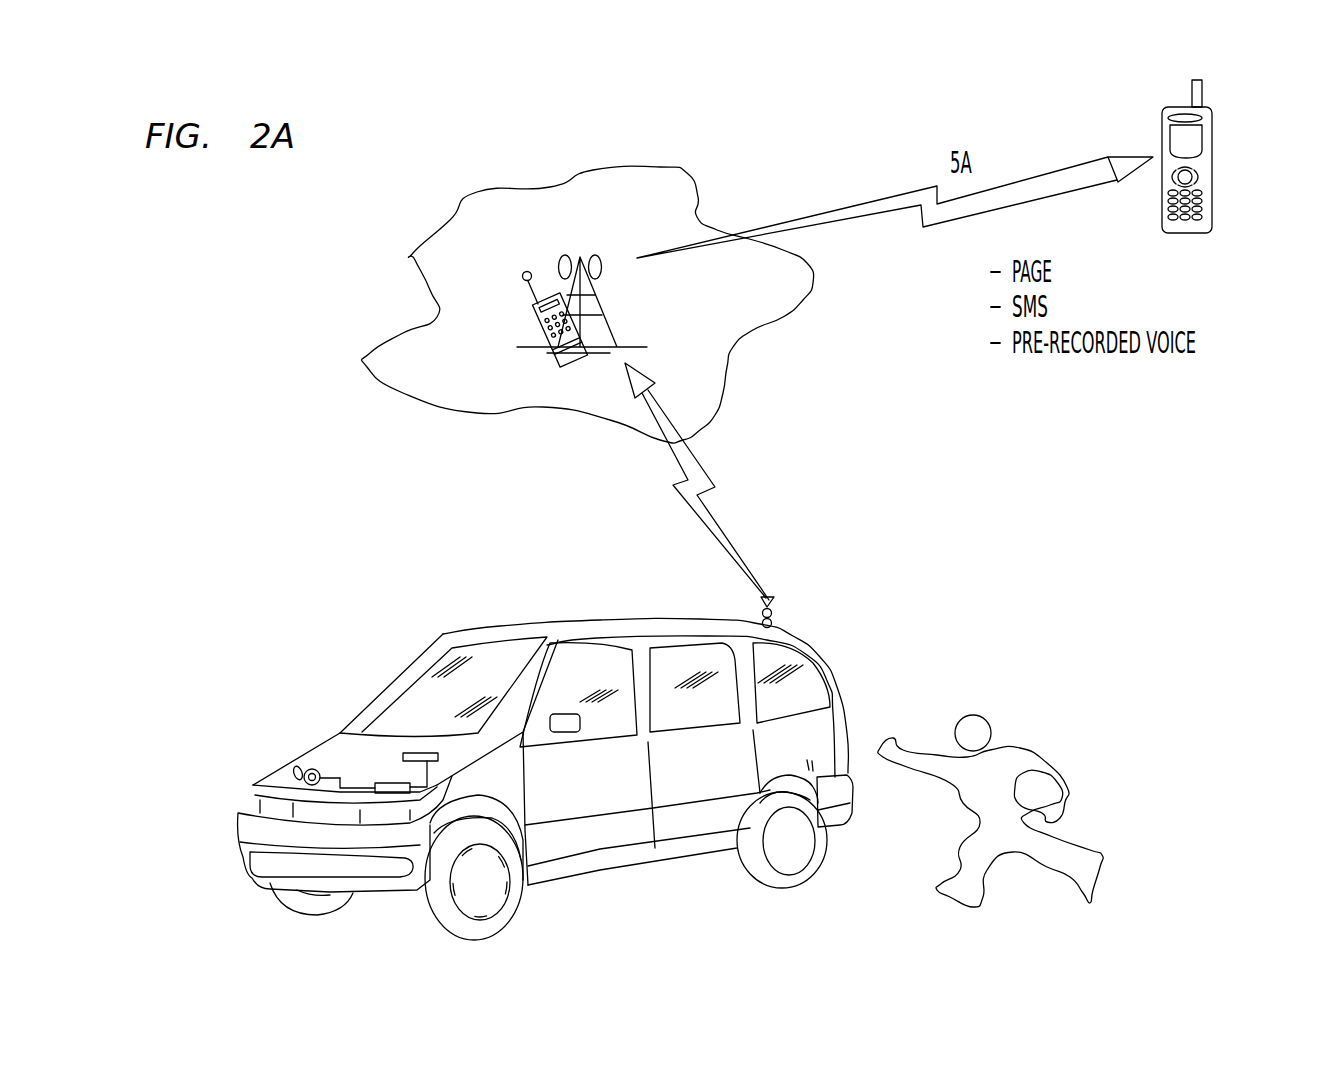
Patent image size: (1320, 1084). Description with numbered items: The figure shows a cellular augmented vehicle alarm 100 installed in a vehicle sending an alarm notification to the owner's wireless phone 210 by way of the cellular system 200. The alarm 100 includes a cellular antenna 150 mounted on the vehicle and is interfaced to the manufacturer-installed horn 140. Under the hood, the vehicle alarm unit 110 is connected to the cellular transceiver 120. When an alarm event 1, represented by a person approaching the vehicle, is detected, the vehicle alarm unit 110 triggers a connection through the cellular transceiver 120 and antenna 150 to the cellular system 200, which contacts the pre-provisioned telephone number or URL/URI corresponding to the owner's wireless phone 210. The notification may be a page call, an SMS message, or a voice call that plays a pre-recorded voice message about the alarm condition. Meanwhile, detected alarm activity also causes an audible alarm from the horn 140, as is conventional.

The alarm event 1 is at (963, 808).
The cellular augmented vehicle alarm 100 is at (268, 623).
The vehicle alarm unit 110 is at (388, 784).
The cellular transceiver 120 is at (418, 752).
The horn 140 is at (287, 775).
The cellular antenna 150 is at (775, 603).
The cellular system 200 is at (413, 253).
The owner's wireless phone 210 is at (1213, 207).